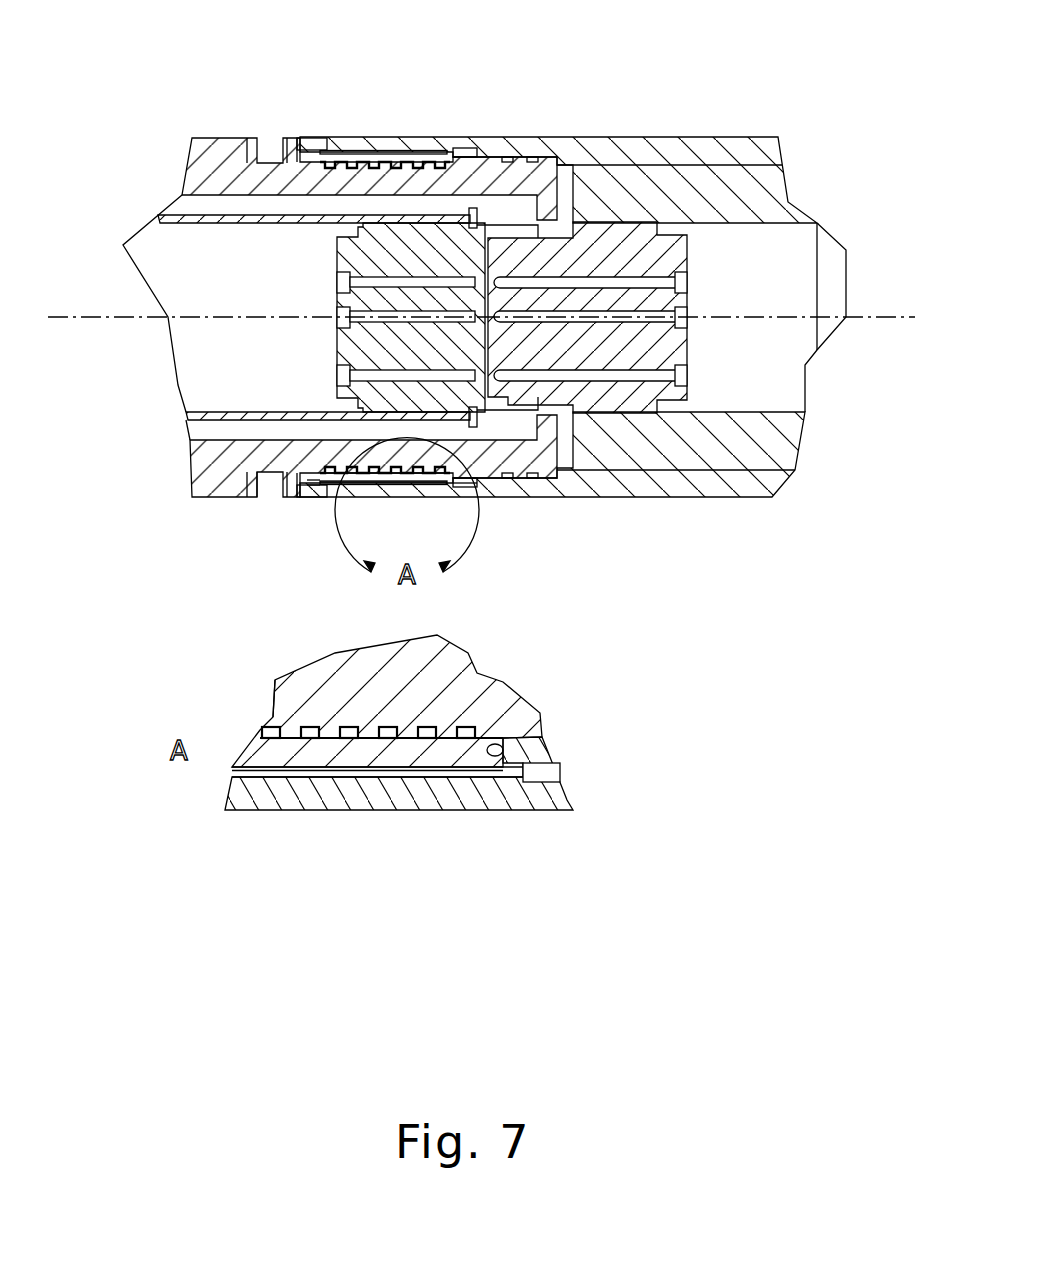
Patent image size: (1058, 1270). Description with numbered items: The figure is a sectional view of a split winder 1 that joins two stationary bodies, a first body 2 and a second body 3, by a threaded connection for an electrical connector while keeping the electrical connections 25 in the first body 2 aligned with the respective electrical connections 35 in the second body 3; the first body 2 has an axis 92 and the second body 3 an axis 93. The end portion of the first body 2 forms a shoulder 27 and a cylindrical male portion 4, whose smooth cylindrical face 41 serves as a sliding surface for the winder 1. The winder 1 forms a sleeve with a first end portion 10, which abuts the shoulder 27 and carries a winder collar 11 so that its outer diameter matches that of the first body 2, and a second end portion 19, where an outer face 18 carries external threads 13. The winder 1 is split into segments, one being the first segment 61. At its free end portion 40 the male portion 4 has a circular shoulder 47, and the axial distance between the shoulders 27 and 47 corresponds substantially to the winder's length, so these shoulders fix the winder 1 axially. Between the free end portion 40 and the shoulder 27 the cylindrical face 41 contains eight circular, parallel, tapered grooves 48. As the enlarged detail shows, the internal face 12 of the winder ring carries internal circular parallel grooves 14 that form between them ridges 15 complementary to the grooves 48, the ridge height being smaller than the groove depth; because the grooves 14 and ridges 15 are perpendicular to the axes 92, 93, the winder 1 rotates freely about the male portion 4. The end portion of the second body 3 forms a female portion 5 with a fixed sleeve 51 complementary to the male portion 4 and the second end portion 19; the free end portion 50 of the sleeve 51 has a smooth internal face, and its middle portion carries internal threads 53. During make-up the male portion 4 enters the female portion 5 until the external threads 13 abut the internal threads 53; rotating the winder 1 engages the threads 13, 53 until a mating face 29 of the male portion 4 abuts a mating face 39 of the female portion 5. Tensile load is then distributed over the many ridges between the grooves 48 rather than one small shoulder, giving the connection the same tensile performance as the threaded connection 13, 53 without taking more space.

The winder 1 is at (302, 485).
The first body 2 is at (208, 170).
The second body 3 is at (688, 178).
The cylindrical male portion 4 is at (300, 160).
The female portion 5 is at (543, 147).
The first end portion 10 is at (247, 492).
The winder collar 11 is at (267, 490).
The internal face 12 is at (400, 162).
The external threads 13 is at (383, 487).
The internal grooves 14 is at (310, 730).
The ridges 15 is at (327, 730).
The outer face 18 is at (333, 482).
The second end portion 19 is at (453, 483).
The electrical connections 25 is at (430, 300).
The shoulder 27 is at (218, 152).
The mating face 29 is at (543, 175).
The electrical connections 35 is at (550, 300).
The mating face 39 is at (543, 177).
The free end portion 40 is at (483, 160).
The cylindrical face 41 is at (318, 487).
The circular shoulder 47 is at (445, 152).
The grooves 48 is at (333, 738).
The free end portion 50 is at (325, 487).
The fixed sleeve 51 is at (418, 150).
The internal threads 53 is at (280, 148).
The first segment 61 is at (345, 150).
The axis 92 is at (85, 318).
The axis 93 is at (876, 320).